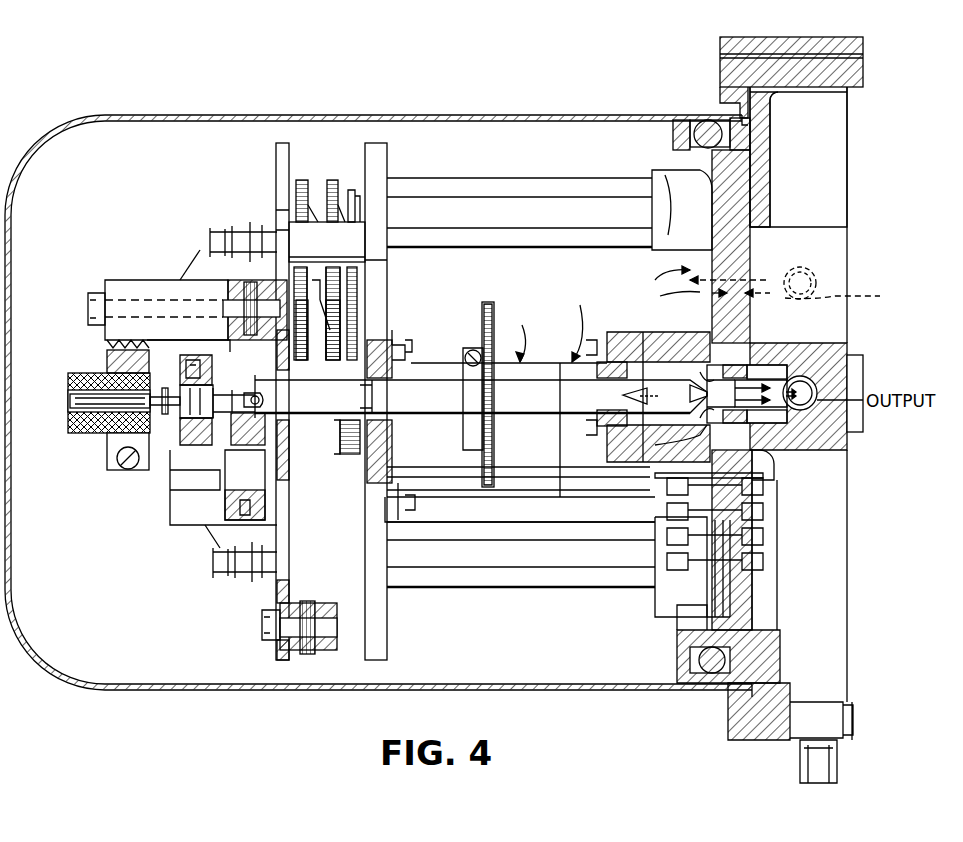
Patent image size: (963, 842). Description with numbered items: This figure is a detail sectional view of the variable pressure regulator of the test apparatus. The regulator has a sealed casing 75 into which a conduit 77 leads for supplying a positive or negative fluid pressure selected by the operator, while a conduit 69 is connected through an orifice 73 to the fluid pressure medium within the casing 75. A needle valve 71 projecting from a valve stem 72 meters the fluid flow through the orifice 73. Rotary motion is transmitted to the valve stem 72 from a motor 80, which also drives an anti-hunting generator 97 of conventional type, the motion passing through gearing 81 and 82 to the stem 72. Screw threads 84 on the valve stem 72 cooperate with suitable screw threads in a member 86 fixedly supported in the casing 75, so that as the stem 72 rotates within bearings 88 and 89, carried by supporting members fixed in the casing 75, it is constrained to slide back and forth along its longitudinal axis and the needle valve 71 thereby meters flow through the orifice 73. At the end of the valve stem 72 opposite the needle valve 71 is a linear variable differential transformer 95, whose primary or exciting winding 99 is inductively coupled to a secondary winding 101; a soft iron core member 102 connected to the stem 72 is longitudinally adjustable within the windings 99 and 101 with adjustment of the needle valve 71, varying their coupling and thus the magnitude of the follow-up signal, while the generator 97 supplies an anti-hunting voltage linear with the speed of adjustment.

The sealed casing 75 is at (408, 114).
The conduit 77 is at (806, 271).
The conduit 69 is at (820, 390).
The needle valve 71 is at (730, 370).
The orifice 73 is at (714, 425).
The anti-hunting generator 97 is at (590, 451).
The gearing 82 is at (490, 300).
The motor 80 is at (540, 453).
The bearing 89 is at (603, 378).
The valve stem 72 is at (440, 405).
The bearing 88 is at (372, 413).
The screw threads 84 is at (305, 416).
The member 86 is at (260, 425).
The gearing 81 is at (330, 178).
The linear variable differential transformer 95 is at (106, 388).
The primary winding 99 is at (68, 385).
The soft iron core member 102 is at (80, 400).
The secondary winding 101 is at (68, 376).